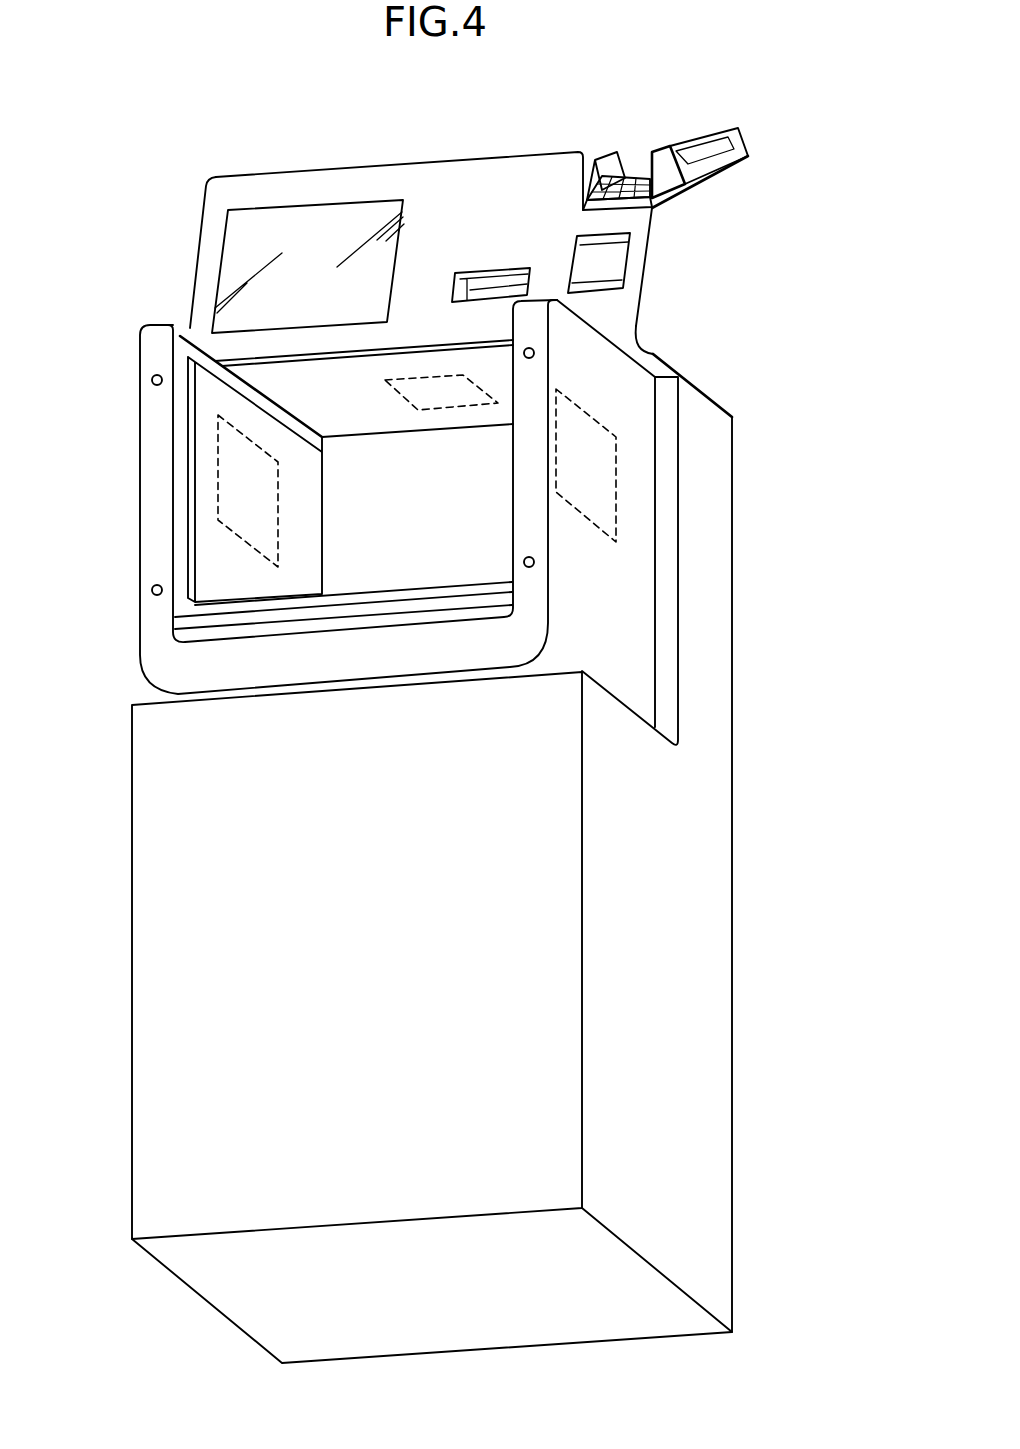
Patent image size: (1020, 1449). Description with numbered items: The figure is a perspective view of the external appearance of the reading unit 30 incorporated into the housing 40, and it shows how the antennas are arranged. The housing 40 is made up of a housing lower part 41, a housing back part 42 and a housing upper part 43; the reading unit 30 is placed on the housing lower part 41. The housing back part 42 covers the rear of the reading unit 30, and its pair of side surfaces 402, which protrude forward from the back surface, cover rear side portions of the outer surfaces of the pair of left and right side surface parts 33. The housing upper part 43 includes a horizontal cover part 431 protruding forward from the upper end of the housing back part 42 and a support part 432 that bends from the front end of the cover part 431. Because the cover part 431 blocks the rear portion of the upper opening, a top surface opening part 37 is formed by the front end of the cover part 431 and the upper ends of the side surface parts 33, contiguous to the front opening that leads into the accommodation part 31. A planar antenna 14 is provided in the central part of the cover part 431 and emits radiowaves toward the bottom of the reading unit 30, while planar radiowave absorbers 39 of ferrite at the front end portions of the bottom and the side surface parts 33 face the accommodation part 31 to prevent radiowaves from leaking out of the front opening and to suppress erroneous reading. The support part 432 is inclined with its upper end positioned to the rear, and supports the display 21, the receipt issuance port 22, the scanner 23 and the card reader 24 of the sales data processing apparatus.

The planar antenna 14 is at (278, 498).
The display 21 is at (315, 202).
The receipt issuance port 22 is at (494, 268).
The scanner 23 is at (628, 258).
The card reader 24 is at (714, 128).
The reading unit 30 is at (140, 340).
The accommodation part 31 is at (378, 560).
The side surface parts 33 is at (629, 639).
The top surface opening part 37 is at (247, 356).
The radiowave absorber 39 is at (192, 477).
The housing 40 is at (435, 1017).
The housing lower part 41 is at (165, 950).
The housing back part 42 is at (690, 816).
The housing upper part 43 is at (470, 227).
The side surfaces 402 is at (716, 551).
The cover part 431 is at (665, 358).
The support part 432 is at (416, 177).